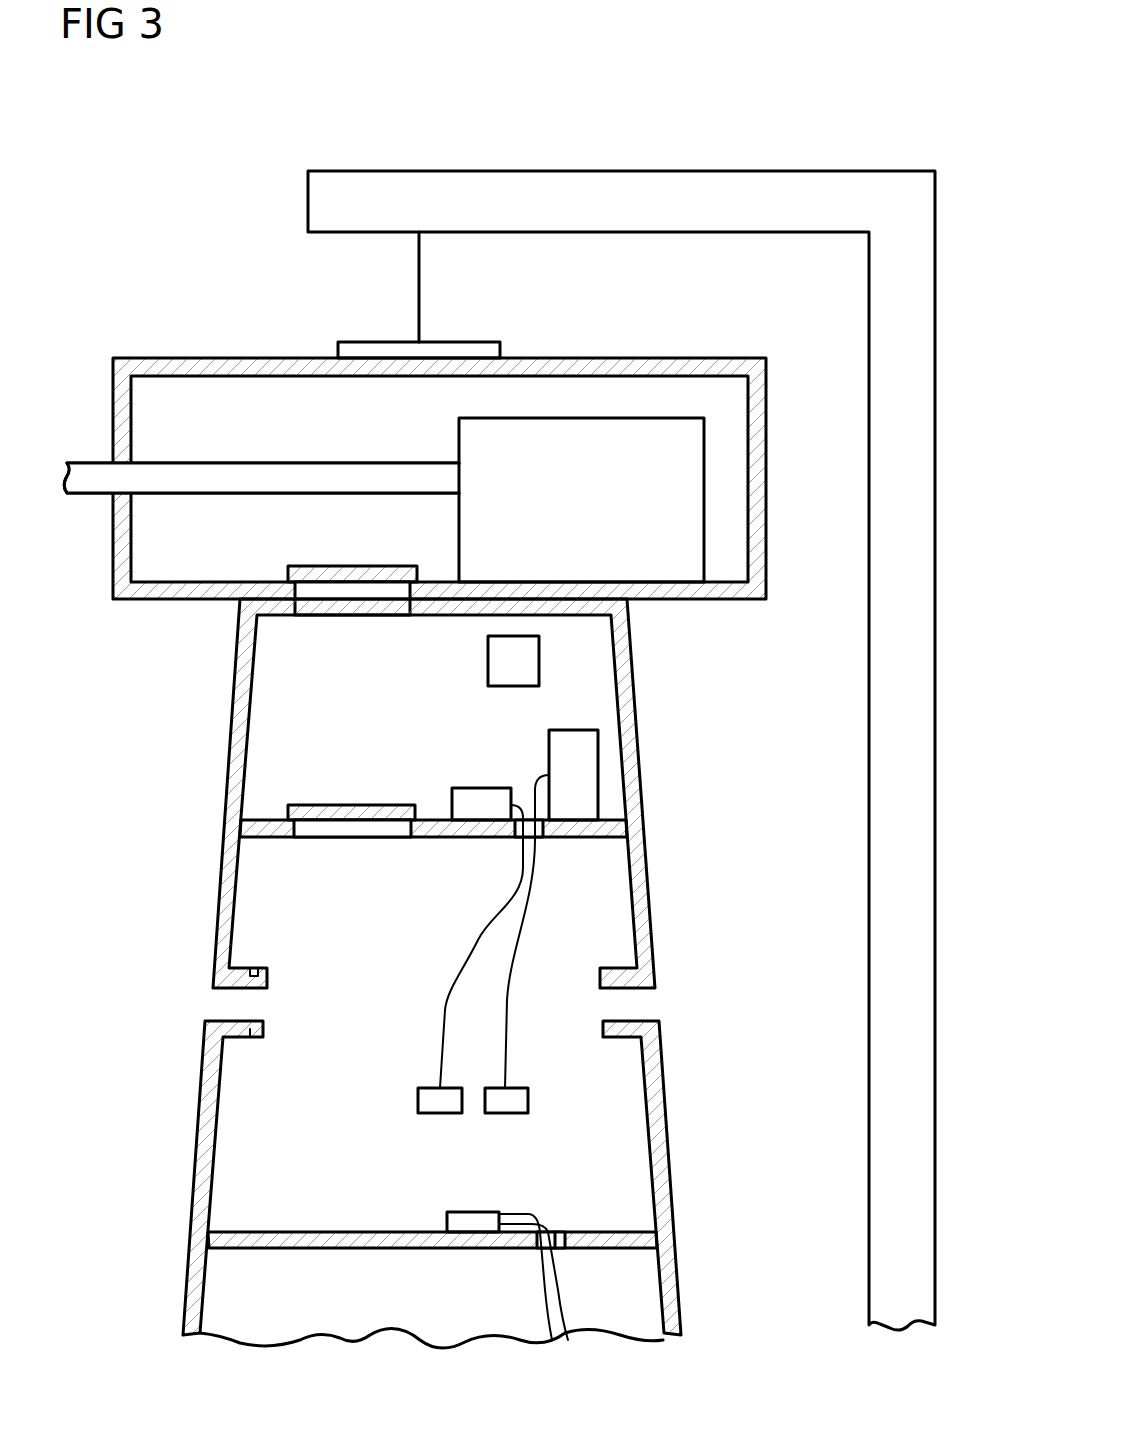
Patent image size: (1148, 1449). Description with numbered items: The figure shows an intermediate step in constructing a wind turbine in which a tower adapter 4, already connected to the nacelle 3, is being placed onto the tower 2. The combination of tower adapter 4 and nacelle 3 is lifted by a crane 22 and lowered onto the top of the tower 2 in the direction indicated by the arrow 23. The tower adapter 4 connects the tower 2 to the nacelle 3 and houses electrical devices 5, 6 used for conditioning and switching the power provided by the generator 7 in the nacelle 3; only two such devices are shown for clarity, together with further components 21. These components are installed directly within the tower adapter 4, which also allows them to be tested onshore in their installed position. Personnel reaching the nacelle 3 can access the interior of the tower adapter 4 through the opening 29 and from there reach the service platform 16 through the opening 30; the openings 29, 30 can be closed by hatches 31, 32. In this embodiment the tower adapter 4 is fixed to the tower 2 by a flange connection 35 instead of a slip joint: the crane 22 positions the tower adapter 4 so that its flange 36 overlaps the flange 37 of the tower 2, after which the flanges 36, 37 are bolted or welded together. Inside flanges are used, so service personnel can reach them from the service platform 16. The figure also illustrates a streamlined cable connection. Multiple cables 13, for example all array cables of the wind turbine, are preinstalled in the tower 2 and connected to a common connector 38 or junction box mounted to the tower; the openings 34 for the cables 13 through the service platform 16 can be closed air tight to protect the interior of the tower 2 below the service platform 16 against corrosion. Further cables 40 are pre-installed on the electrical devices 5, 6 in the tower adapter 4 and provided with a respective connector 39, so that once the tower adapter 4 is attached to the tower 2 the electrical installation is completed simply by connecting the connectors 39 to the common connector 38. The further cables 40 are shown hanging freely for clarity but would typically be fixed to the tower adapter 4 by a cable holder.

The crane 22 is at (876, 146).
The nacelle 3 is at (696, 357).
The generator 7 is at (601, 437).
The hatch 31 is at (336, 566).
The opening 29 is at (388, 640).
The further components 21 is at (527, 668).
The electrical device 5 is at (474, 780).
The electrical device 6 is at (579, 746).
The tower adapter 4 is at (645, 797).
The hatch 32 is at (349, 805).
The arrow 23 is at (446, 850).
The opening 30 is at (313, 860).
The flange 36 is at (252, 980).
The flange connection 35 is at (185, 1003).
The flange 37 is at (253, 1030).
The service platform 16 is at (285, 1240).
The cables 13 is at (537, 1295).
The openings 34 is at (560, 1232).
The common connector 38 is at (474, 1220).
The connector 39 is at (428, 1098).
The further cables 40 is at (475, 940).
The tower 2 is at (670, 1140).